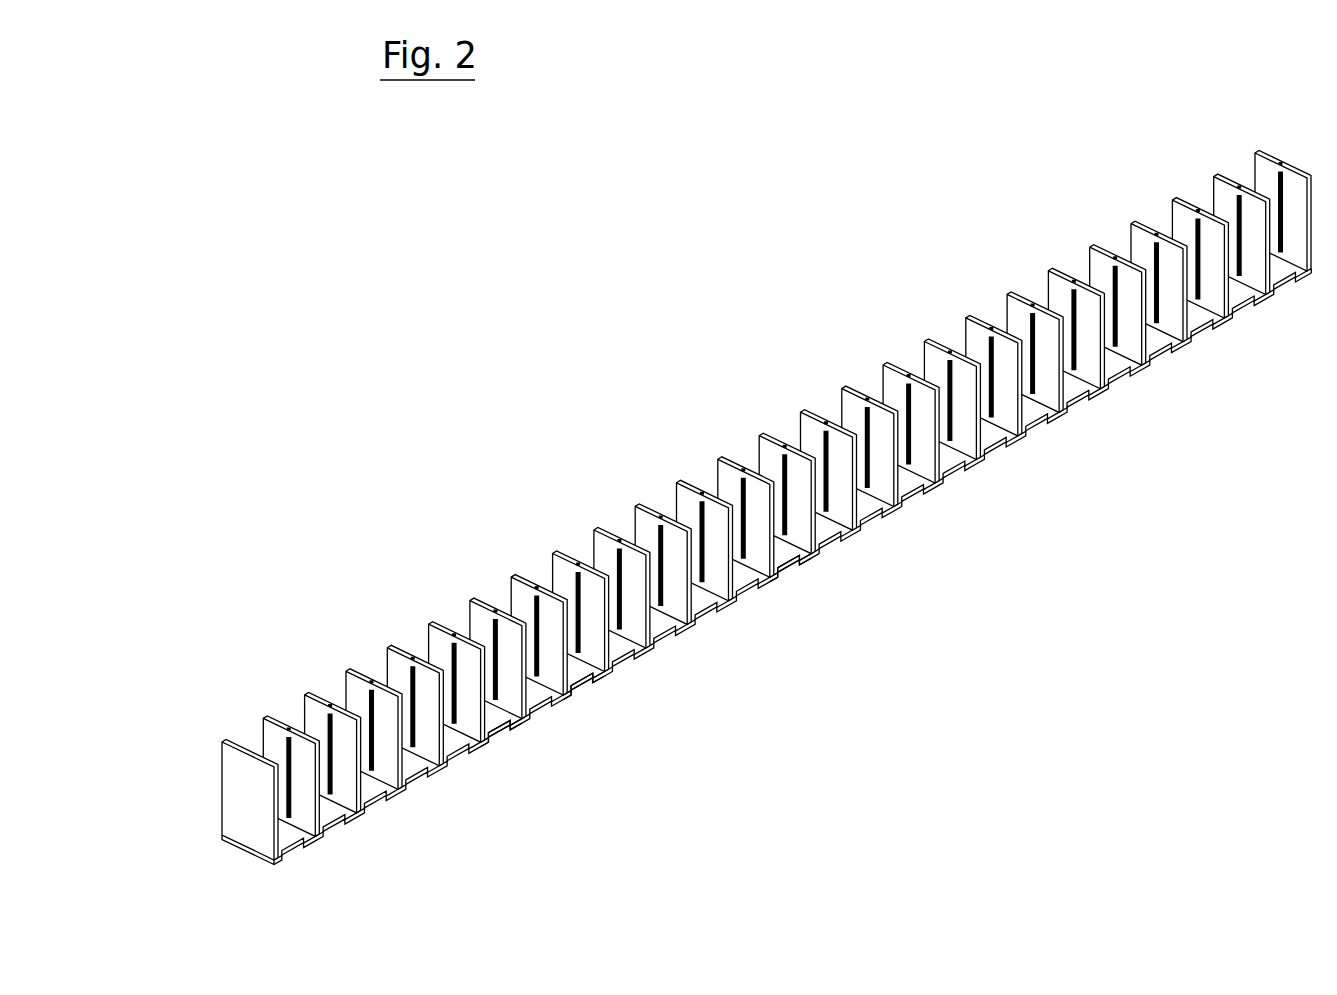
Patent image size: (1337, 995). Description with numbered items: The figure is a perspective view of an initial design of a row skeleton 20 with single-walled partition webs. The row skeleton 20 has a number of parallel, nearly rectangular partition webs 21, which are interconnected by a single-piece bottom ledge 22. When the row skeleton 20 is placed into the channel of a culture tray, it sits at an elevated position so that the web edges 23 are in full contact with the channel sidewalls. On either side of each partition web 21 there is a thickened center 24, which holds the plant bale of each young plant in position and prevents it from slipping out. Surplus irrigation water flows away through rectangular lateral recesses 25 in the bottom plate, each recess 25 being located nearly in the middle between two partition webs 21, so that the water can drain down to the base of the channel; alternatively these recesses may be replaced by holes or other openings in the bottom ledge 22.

The row skeleton 20 is at (525, 397).
The partition web 21 is at (673, 590).
The bottom ledge 22 is at (575, 665).
The web edge 23 is at (485, 703).
The thickened center 24 is at (870, 470).
The lateral recess 25 is at (790, 552).